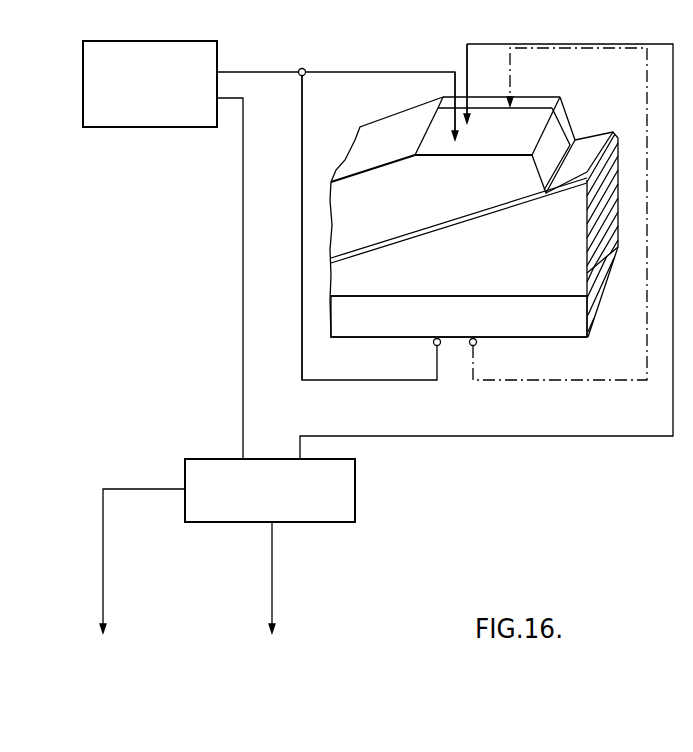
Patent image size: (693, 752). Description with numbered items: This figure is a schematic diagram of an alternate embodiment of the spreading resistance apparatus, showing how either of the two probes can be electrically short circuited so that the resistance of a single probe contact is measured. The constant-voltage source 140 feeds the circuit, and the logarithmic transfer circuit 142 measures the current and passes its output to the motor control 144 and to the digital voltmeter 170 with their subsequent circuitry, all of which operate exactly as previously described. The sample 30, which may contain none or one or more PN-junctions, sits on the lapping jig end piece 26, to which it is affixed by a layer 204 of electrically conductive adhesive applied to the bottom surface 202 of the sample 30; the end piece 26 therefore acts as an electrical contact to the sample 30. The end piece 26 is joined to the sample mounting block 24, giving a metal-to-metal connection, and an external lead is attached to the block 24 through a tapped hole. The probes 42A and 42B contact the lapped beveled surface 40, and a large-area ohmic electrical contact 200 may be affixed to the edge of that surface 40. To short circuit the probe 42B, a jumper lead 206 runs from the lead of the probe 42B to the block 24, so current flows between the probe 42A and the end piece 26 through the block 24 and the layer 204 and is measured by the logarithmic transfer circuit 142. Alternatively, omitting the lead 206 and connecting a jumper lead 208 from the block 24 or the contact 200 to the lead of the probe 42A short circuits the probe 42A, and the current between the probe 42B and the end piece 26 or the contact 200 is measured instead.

The constant-voltage source 140 is at (165, 128).
The logarithmic transfer circuit 142 is at (356, 497).
The motor control 144 is at (117, 585).
The digital voltmeter 170 is at (297, 601).
The electrical contact 200 is at (530, 100).
The bottom surface of the sample 202 is at (388, 240).
The layer of electrically conductive adhesive 204 is at (432, 229).
The jumper lead 206 is at (304, 104).
The jumper lead 208 is at (647, 78).
The sample mounting block 24 is at (568, 322).
The lapping jig end piece 26 is at (520, 285).
The sample 30 is at (568, 116).
The beveled surface 40 is at (517, 152).
The probe 42A is at (468, 118).
The probe 42B is at (456, 141).